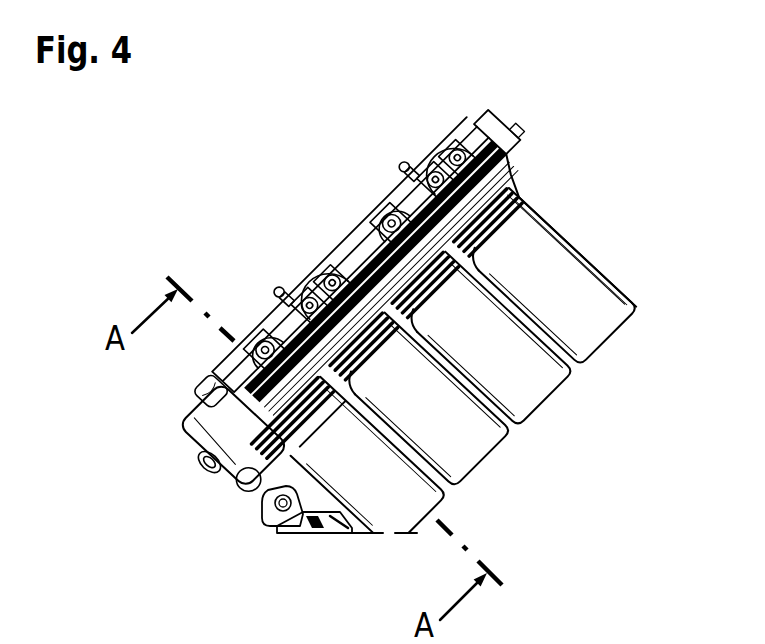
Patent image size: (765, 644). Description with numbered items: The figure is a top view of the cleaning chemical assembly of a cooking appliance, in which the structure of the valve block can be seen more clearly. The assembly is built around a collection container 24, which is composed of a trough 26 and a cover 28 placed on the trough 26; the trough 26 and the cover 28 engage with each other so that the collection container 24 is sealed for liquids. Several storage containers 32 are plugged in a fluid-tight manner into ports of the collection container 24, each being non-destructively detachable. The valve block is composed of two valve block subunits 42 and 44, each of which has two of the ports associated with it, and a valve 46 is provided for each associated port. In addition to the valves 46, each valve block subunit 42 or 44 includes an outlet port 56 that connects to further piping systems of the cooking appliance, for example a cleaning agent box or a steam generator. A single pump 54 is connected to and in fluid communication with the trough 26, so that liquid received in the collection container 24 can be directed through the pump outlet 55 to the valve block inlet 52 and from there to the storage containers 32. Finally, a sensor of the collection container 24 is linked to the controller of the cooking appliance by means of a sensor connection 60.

The collection container 24 is at (196, 491).
The trough 26 is at (186, 423).
The cover 28 is at (530, 196).
The storage container 32 is at (432, 503).
The valve block subunit 42 is at (186, 245).
The valve block subunit 44 is at (362, 158).
The valve 46 is at (388, 220).
The valve block inlet 52 is at (204, 421).
The pump 54 is at (303, 534).
The pump outlet 55 is at (262, 490).
The outlet port 56 is at (404, 164).
The sensor connection 60 is at (206, 468).